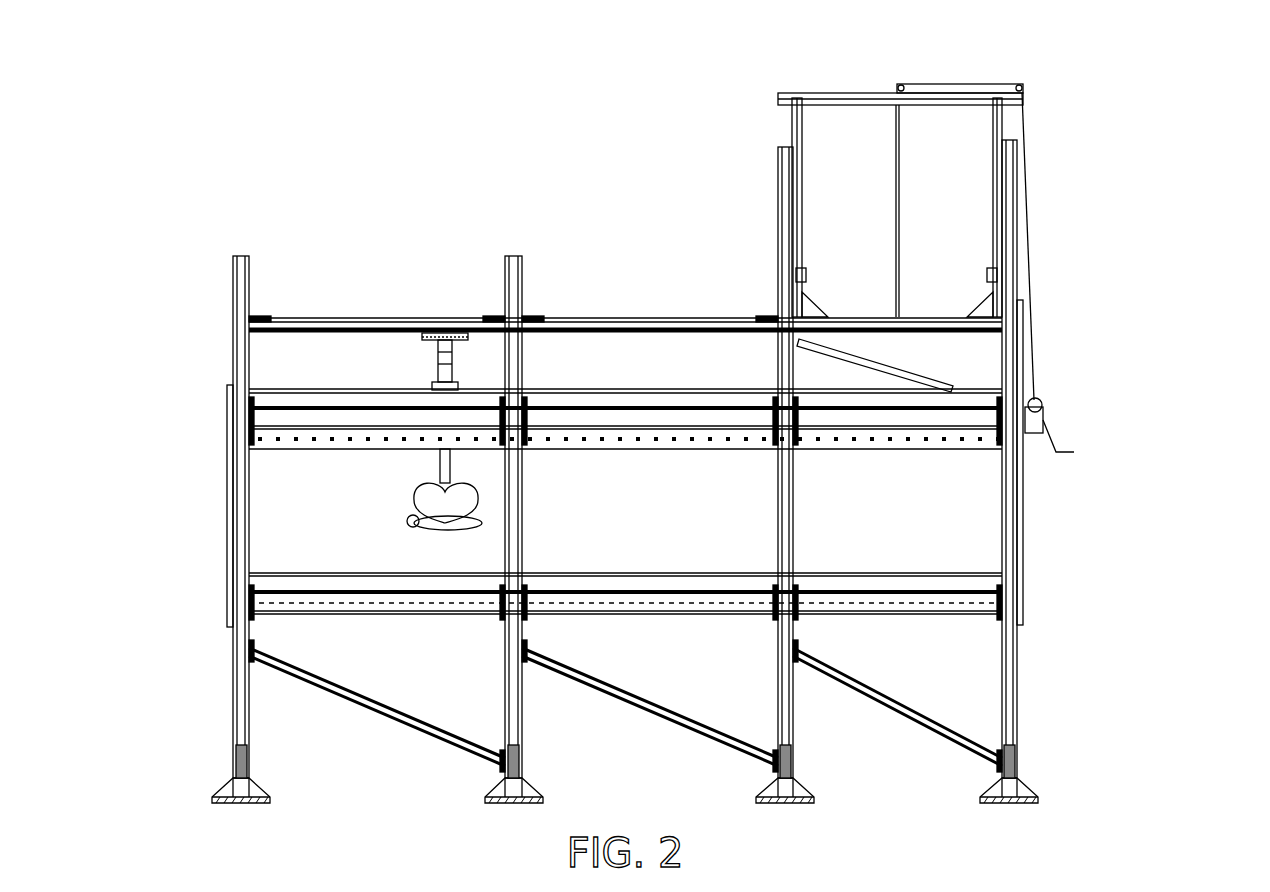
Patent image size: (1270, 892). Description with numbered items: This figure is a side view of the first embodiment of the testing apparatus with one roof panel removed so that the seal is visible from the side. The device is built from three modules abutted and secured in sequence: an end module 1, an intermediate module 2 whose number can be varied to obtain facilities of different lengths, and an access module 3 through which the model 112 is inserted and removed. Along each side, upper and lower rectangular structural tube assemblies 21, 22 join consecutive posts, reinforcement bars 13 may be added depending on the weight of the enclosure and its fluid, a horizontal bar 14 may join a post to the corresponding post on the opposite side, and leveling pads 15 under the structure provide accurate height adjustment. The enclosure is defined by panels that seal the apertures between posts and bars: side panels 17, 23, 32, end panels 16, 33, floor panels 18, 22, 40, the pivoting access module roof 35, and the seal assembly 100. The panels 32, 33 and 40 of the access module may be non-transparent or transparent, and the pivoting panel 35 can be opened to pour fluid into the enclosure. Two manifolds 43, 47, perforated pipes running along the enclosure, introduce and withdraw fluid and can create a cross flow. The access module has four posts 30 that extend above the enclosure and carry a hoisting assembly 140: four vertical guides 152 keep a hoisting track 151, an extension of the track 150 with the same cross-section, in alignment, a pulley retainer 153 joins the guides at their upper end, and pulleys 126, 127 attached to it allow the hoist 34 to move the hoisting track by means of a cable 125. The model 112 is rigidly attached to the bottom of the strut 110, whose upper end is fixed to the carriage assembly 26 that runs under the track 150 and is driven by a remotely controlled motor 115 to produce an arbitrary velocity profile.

The end module 1 is at (311, 220).
The intermediate module 2 is at (569, 220).
The access module 3 is at (870, 76).
The reinforcement bars 13 is at (455, 735).
The horizontal bar 14 is at (230, 787).
The leveling pads 15 is at (252, 790).
The end panel 16 is at (228, 478).
The side panel 17 is at (295, 518).
The floor panel 18 is at (420, 612).
The upper rectangular structural tube assembly 21 is at (700, 428).
The lower rectangular structural tube assembly 22 is at (680, 615).
The side panel 23 is at (668, 512).
The carriage assembly 26 is at (462, 335).
The posts 30 is at (1010, 695).
The side panel 32 is at (878, 507).
The end panel 33 is at (1020, 570).
The hoist 34 is at (1040, 408).
The access module roof 35 is at (880, 370).
The floor panel 40 is at (995, 625).
The manifold 43 is at (310, 580).
The manifold 47 is at (270, 437).
The seal assembly 100 is at (370, 398).
The strut 110 is at (447, 457).
The model 112 is at (440, 527).
The motor 115 is at (440, 366).
The cable 125 is at (1032, 240).
The pulley 126 is at (1025, 88).
The pulley 127 is at (903, 105).
The hoisting assembly 140 is at (1155, 66).
The track 150 is at (651, 318).
The hoisting track 151 is at (923, 317).
The vertical guides 152 is at (797, 130).
The pulley retainer 153 is at (870, 102).